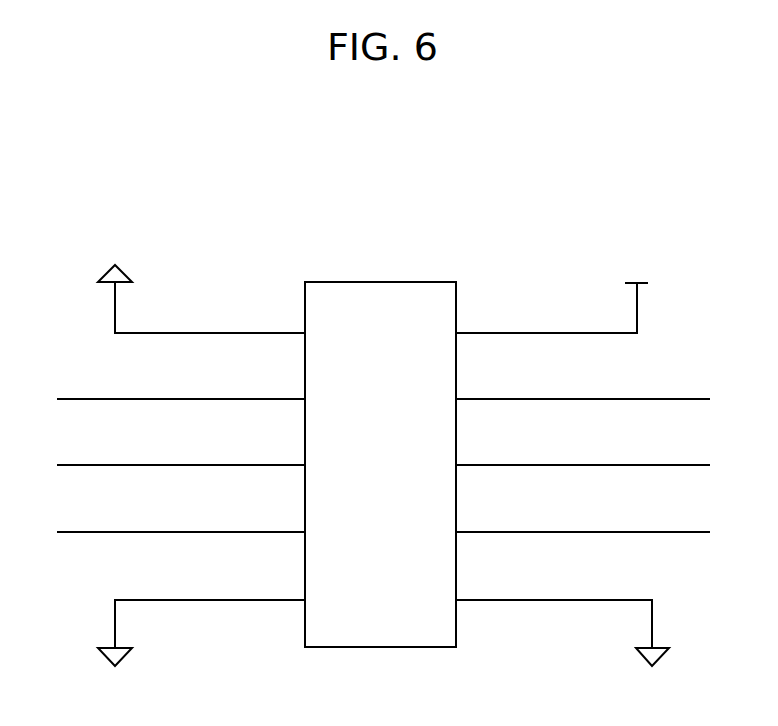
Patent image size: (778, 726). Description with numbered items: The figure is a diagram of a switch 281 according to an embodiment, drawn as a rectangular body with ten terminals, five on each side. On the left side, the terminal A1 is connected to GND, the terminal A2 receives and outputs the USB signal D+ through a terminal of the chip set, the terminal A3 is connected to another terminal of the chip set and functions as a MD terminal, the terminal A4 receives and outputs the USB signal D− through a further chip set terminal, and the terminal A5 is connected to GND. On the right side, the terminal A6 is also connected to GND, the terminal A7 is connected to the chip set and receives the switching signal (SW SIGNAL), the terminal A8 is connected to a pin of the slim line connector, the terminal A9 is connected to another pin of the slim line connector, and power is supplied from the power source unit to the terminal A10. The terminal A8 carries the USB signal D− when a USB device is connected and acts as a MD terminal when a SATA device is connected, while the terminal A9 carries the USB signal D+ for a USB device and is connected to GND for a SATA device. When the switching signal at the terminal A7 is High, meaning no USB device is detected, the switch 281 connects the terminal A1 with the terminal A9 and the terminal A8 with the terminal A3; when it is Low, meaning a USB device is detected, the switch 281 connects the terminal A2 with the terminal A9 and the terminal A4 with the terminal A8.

The switch 281 is at (375, 282).
The terminal A1 is at (300, 333).
The terminal A2 is at (300, 399).
The terminal A3 is at (300, 465).
The terminal A4 is at (300, 532).
The terminal A5 is at (300, 600).
The terminal A6 is at (460, 598).
The terminal A7 is at (460, 530).
The terminal A8 is at (460, 463).
The terminal A9 is at (460, 397).
The terminal A10 is at (460, 331).